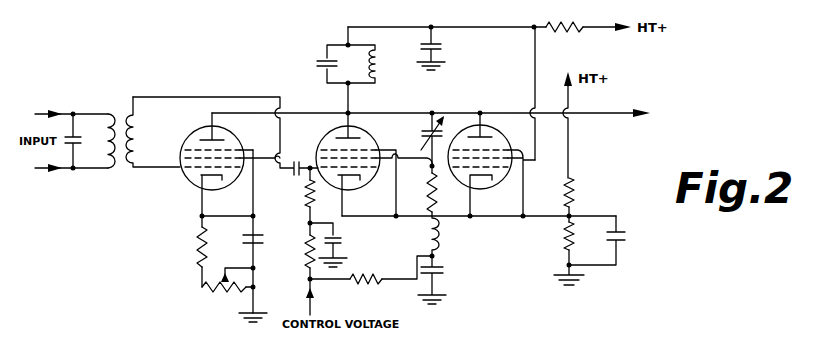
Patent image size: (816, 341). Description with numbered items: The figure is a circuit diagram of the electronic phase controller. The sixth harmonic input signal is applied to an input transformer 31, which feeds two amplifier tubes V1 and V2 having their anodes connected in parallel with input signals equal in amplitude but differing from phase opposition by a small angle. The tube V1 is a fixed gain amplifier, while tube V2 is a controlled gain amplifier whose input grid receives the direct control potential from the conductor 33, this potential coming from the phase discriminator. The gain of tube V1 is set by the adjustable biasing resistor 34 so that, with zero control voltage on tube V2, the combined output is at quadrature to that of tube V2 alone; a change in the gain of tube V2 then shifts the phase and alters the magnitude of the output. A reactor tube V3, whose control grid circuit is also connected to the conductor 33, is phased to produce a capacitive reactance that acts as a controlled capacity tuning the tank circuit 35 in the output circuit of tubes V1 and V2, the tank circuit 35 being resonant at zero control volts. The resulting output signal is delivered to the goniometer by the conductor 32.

The input transformer 31 is at (121, 113).
The conductor 32 is at (605, 113).
The conductor 33 is at (316, 298).
The adjustable biasing resistor 34 is at (205, 293).
The tank circuit 35 is at (326, 51).
The amplifier tube V1 is at (191, 136).
The amplifier tube V2 is at (324, 143).
The reactor tube V3 is at (494, 130).